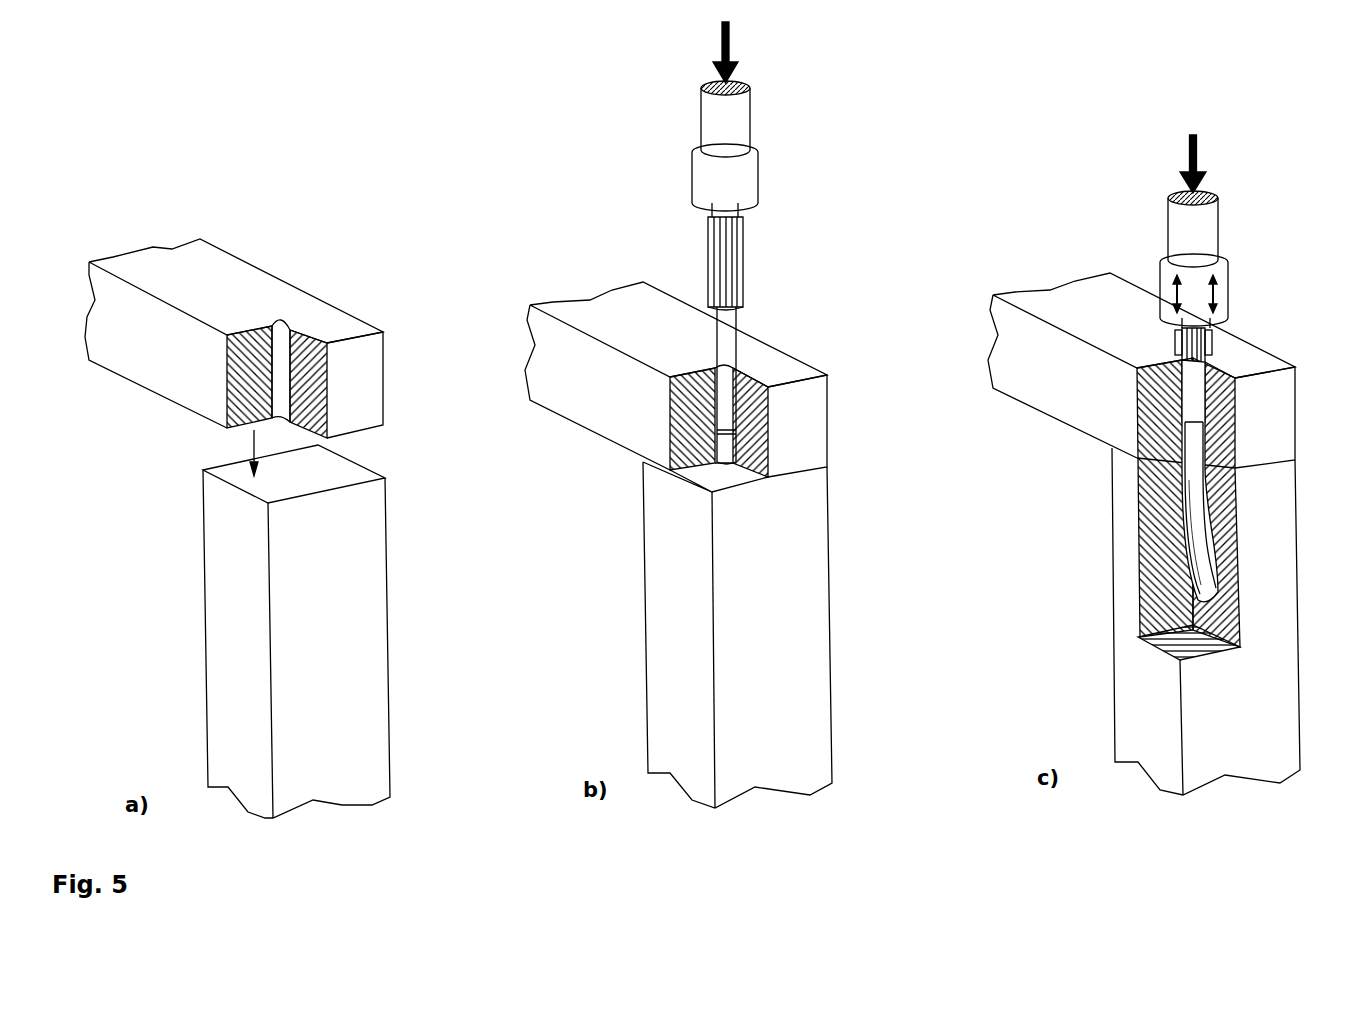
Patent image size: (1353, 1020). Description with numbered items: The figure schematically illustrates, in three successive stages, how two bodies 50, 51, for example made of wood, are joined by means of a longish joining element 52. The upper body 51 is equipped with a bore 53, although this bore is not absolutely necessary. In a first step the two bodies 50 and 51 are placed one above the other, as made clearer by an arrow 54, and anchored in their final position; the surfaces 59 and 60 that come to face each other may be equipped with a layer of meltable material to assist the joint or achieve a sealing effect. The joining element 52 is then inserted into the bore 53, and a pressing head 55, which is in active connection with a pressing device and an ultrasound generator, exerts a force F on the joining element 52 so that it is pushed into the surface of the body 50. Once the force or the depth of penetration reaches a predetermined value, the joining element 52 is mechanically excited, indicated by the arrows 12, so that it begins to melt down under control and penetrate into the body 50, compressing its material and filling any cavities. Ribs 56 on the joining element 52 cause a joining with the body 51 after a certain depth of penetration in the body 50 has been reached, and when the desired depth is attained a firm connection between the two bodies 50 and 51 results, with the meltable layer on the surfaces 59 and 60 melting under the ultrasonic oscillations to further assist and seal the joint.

The arrows 12 is at (1170, 292).
The body 50 is at (375, 577).
The body 51 is at (258, 280).
The joining element 52 is at (727, 337).
The bore 53 is at (280, 337).
The arrow 54 is at (253, 450).
The pressing head 55 is at (732, 127).
The ribs 56 is at (1212, 350).
The surface 59 is at (268, 492).
The surface 60 is at (367, 433).